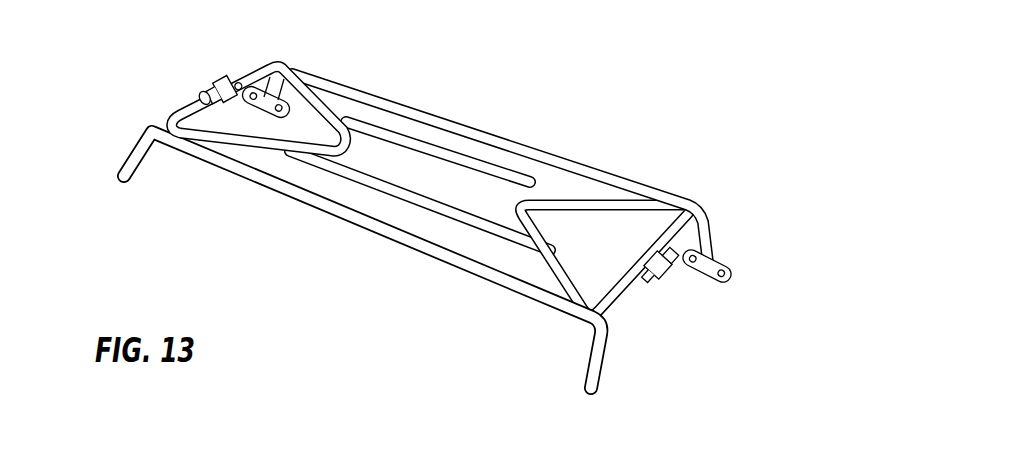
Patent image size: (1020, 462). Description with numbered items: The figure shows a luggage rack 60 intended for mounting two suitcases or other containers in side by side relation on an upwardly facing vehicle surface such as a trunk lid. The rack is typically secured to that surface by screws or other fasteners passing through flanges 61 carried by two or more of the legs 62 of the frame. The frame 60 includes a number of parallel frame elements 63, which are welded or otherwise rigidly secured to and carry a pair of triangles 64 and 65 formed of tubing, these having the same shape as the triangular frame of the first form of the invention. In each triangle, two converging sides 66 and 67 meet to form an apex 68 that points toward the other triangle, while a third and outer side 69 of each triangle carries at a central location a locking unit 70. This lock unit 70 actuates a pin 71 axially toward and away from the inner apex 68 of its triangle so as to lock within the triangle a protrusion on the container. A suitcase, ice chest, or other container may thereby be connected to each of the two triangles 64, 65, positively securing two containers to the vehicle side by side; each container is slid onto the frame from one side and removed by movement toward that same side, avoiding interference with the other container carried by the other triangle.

The luggage rack 60 is at (590, 131).
The flanges 61 is at (287, 100).
The legs 62 is at (714, 237).
The parallel frame elements 63 is at (397, 192).
The triangle 64 is at (278, 150).
The triangle 65 is at (606, 313).
The converging side 66 is at (328, 107).
The converging side 67 is at (569, 281).
The apex 68 is at (353, 146).
The outer side 69 is at (193, 101).
The locking unit 70 is at (226, 79).
The pin 71 is at (655, 257).